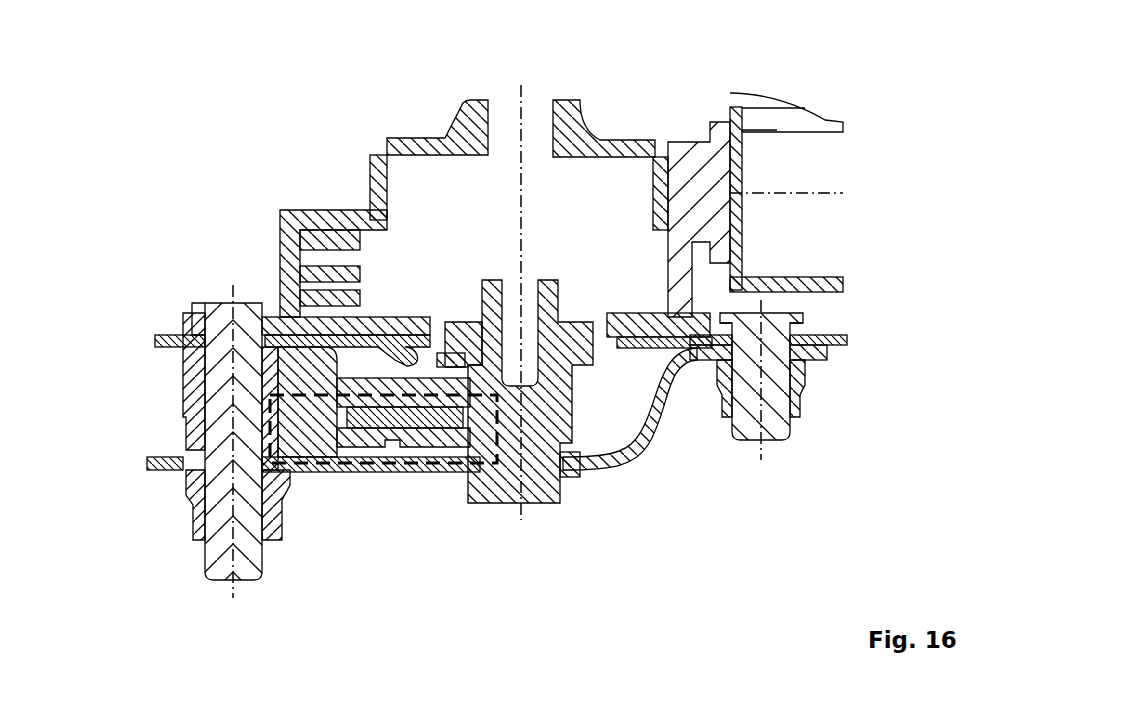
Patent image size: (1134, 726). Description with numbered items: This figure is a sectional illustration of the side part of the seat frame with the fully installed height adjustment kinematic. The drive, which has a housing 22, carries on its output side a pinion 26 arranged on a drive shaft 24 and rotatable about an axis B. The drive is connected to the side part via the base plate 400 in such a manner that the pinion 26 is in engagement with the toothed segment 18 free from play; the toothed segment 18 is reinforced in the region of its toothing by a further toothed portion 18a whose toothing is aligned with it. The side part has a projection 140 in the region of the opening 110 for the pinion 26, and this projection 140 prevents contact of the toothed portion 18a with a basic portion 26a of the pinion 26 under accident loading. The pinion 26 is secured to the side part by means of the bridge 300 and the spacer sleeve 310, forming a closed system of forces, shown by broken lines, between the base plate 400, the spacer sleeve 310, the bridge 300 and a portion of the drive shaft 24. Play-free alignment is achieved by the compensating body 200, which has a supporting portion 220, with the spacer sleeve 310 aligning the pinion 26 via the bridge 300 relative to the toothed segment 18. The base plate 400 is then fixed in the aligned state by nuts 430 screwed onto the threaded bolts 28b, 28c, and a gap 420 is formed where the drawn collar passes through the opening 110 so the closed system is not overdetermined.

The threaded bolt 28c is at (222, 320).
The threaded bolt 28b is at (762, 413).
The gap 420 is at (197, 338).
The nut 430 is at (200, 503).
The spacer sleeve 310 is at (193, 417).
The base plate 400 is at (325, 327).
The projection 140 is at (410, 362).
The opening 110 is at (440, 345).
The housing 22 is at (458, 137).
The basic portion 26a is at (458, 352).
The axis B is at (520, 118).
The drive shaft 24 is at (540, 439).
The pinion 26 is at (537, 457).
The compensating body 200 is at (340, 456).
The supporting portion 220 is at (315, 428).
The toothed segment 18 is at (424, 480).
The further toothed portion 18a is at (440, 420).
The bridge 300 is at (660, 427).